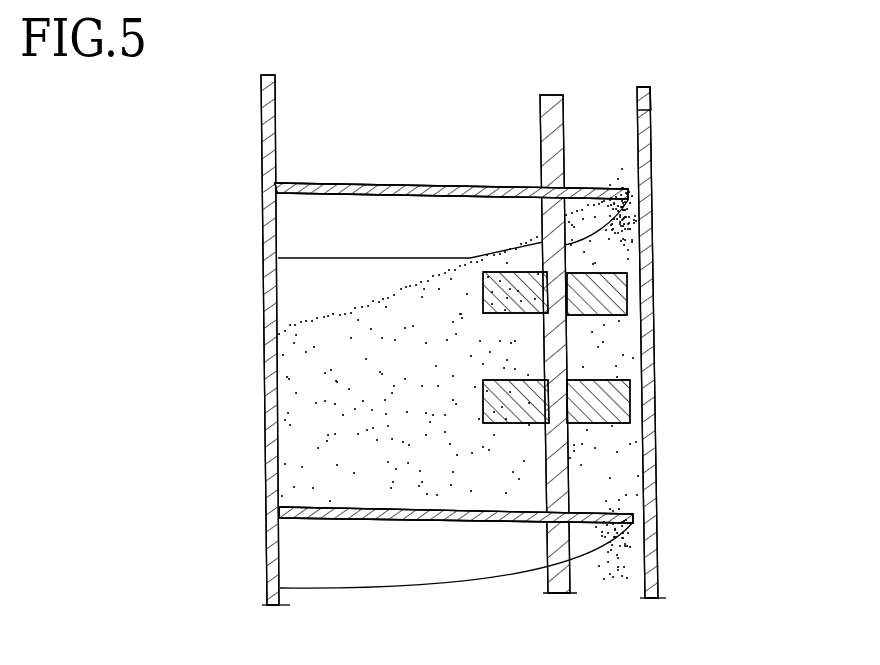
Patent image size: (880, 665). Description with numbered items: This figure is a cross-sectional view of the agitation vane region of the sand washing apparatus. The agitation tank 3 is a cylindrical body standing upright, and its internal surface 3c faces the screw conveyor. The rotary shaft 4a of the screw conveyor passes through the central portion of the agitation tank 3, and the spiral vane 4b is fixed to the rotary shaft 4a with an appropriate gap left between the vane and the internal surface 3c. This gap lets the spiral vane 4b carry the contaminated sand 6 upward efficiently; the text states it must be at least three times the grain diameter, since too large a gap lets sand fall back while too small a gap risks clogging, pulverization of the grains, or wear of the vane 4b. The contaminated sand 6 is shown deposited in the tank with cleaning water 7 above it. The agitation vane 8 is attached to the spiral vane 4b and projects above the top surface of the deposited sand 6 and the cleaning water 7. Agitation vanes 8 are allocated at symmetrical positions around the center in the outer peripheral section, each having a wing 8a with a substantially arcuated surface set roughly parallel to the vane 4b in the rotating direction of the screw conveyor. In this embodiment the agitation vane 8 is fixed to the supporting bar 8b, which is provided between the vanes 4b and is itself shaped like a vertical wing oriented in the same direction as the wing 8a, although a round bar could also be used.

The agitation tank 3 is at (651, 140).
The internal surface of the agitation tank 3c is at (637, 106).
The rotary shaft 4a is at (278, 410).
The spiral vane 4b is at (383, 185).
The contaminated sand 6 is at (365, 319).
The cleaning water 7 is at (345, 365).
The agitation vane 8 is at (614, 326).
The wing 8a is at (607, 318).
The supporting bar 8b is at (570, 472).